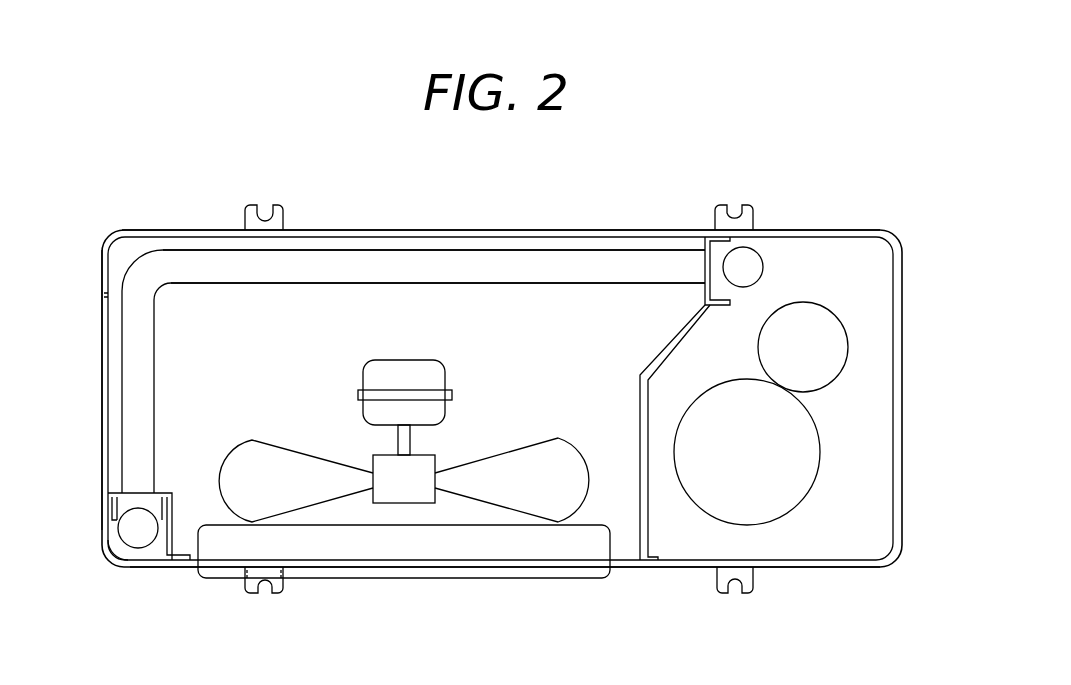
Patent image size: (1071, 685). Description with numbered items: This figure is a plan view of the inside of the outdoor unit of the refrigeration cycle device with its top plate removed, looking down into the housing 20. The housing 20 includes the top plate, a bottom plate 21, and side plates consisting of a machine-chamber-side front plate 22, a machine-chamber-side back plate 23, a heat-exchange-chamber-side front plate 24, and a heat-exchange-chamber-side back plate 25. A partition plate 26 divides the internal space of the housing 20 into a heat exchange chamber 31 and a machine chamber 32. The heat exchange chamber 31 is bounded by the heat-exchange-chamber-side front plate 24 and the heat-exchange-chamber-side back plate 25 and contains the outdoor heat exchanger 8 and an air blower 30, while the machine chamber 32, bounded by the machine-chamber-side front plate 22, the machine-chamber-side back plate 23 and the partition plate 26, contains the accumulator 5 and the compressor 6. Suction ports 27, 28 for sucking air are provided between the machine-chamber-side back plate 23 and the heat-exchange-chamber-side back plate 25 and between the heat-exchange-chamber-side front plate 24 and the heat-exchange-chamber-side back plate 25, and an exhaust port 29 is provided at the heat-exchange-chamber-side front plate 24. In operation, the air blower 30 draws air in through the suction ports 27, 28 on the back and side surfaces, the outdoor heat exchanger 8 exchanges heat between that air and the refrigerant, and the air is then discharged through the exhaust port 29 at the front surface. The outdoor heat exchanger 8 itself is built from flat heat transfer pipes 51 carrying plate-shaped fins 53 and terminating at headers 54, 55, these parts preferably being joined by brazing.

The accumulator 5 is at (828, 330).
The compressor 6 is at (810, 450).
The outdoor heat exchanger 8 is at (447, 250).
The housing 20 is at (893, 233).
The bottom plate 21 is at (132, 250).
The machine-chamber-side front plate 22 is at (838, 565).
The machine-chamber-side back plate 23 is at (845, 235).
The heat-exchange-chamber-side front plate 24 is at (108, 557).
The heat-exchange-chamber-side back plate 25 is at (107, 265).
The partition plate 26 is at (648, 528).
The suction port 27 is at (345, 230).
The suction port 28 is at (102, 390).
The exhaust port 29 is at (365, 573).
The air blower 30 is at (435, 497).
The heat exchange chamber 31 is at (179, 339).
The machine chamber 32 is at (857, 539).
The flat heat transfer pipe 51 is at (718, 262).
The plate-shaped fin 53 is at (503, 262).
The header 54 is at (138, 528).
The header 55 is at (745, 263).